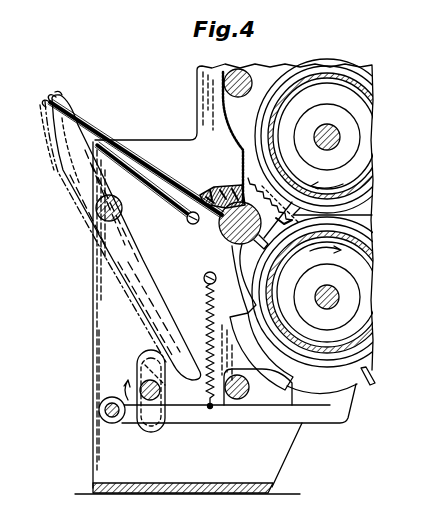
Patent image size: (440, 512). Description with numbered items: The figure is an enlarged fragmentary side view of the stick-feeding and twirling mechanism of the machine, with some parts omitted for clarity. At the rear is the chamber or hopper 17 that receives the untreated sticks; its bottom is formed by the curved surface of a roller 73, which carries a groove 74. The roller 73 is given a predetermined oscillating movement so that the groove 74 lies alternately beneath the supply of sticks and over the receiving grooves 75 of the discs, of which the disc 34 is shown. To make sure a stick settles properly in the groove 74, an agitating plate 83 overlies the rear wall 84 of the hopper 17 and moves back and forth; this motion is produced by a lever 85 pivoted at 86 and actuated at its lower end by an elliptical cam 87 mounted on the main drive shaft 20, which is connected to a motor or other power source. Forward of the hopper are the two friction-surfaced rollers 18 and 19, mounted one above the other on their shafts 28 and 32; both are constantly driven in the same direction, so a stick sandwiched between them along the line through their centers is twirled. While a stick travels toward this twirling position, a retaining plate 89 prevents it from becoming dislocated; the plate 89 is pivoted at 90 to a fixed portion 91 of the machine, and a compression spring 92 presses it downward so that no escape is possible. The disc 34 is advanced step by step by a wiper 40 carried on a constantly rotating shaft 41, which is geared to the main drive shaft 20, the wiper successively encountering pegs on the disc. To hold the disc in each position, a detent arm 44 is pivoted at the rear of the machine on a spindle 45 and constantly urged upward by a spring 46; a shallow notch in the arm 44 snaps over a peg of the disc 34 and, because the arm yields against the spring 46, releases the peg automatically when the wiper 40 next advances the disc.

The chamber 17 is at (170, 156).
The roller 18 is at (357, 172).
The roller 19 is at (366, 323).
The main drive shaft 20 is at (150, 401).
The shaft 28 is at (340, 137).
The shaft 32 is at (339, 295).
The disc 34 is at (352, 387).
The wiper 40 is at (252, 391).
The shaft 41 is at (210, 408).
The arm 44 is at (333, 418).
The spindle 45 is at (99, 410).
The spring 46 is at (206, 304).
The roller 73 is at (220, 235).
The groove 74 is at (243, 250).
The receiving grooves 75 is at (252, 260).
The agitating plate 83 is at (118, 136).
The rear wall 84 is at (157, 190).
The lever 85 is at (118, 255).
The pivot 86 is at (97, 214).
The elliptical cam 87 is at (142, 361).
The retaining plate 89 is at (350, 216).
The pivot 90 is at (245, 197).
The fixed portion 91 is at (243, 166).
The compression spring 92 is at (266, 190).